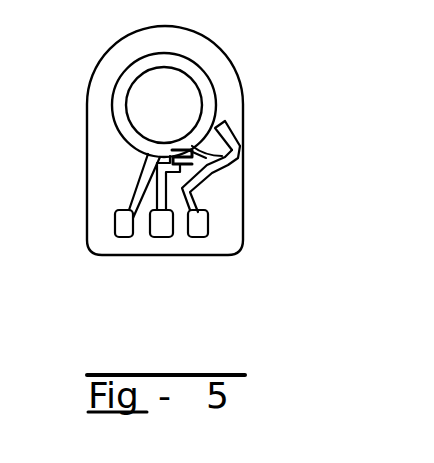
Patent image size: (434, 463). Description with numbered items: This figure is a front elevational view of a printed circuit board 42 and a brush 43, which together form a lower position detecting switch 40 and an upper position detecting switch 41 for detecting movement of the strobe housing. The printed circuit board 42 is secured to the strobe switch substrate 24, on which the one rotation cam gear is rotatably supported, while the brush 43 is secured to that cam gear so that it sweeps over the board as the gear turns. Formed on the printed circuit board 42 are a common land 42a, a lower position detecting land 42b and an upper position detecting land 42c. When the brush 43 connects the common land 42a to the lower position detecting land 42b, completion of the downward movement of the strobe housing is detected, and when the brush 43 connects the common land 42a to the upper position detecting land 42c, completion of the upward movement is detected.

The strobe switch substrate 24 is at (246, 89).
The lower position detecting switch 40 is at (203, 170).
The upper position detecting switch 41 is at (238, 132).
The printed circuit board 42 is at (182, 245).
The common land 42a is at (121, 232).
The lower position detecting land 42b is at (161, 232).
The upper position detecting land 42c is at (228, 253).
The brush 43 is at (234, 152).